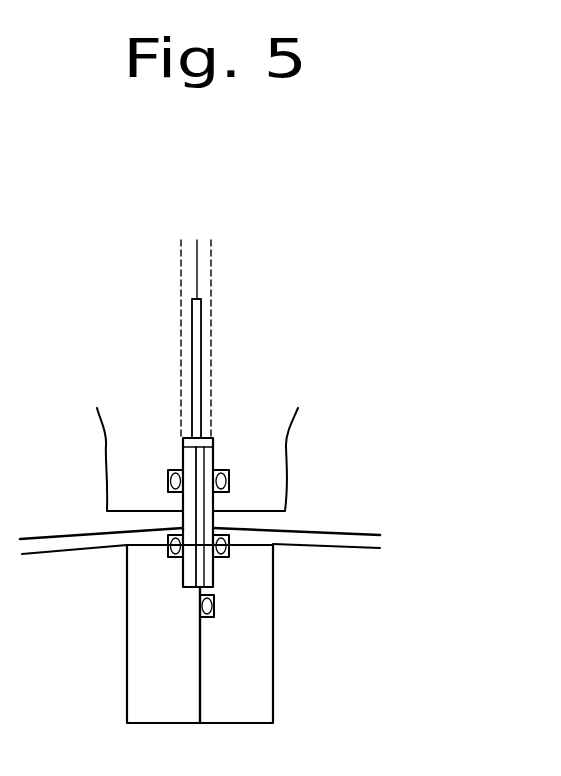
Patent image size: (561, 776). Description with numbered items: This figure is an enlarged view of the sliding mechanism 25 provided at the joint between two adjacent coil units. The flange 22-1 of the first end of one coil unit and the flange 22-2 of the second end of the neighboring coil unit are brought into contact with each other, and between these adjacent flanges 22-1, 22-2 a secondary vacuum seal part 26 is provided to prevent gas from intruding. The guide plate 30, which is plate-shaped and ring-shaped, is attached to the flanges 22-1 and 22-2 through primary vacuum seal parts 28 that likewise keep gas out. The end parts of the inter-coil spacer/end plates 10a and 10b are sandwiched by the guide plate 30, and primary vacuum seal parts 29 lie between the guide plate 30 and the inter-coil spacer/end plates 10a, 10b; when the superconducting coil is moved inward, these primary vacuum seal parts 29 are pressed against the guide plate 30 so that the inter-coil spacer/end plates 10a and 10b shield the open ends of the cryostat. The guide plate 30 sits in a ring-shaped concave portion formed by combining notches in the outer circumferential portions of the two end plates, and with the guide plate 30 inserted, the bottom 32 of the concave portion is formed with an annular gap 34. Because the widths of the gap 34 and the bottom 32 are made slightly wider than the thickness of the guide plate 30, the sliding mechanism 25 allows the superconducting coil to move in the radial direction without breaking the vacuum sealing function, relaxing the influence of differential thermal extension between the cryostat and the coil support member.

The inter-coil spacer/end plate 10a is at (117, 448).
The inter-coil spacer/end plate 10b is at (278, 458).
The flange 22-1 is at (138, 688).
The flange 22-2 is at (265, 687).
The sliding mechanism 25 is at (398, 598).
The secondary vacuum seal part 26 is at (216, 605).
The primary vacuum seal part 28 is at (168, 547).
The primary vacuum seal part 29 is at (168, 480).
The guide plate 30 is at (208, 520).
The bottom of the concave portion 32 is at (186, 437).
The annular gap 34 is at (207, 440).